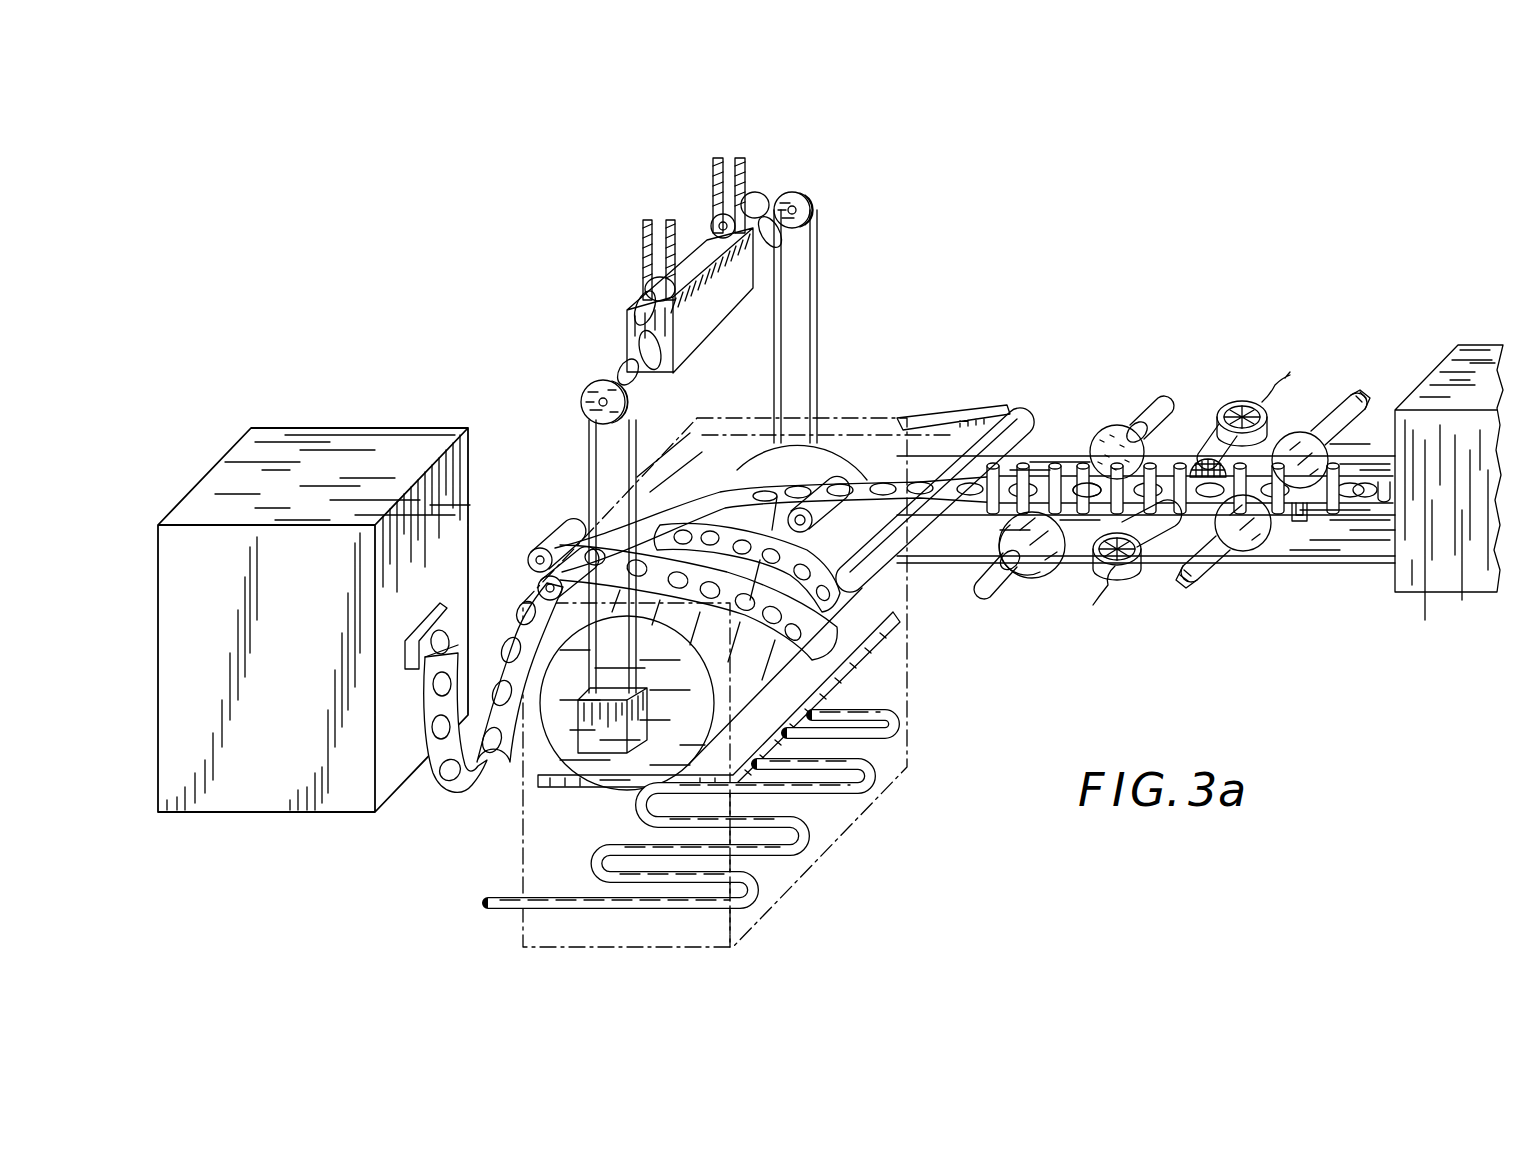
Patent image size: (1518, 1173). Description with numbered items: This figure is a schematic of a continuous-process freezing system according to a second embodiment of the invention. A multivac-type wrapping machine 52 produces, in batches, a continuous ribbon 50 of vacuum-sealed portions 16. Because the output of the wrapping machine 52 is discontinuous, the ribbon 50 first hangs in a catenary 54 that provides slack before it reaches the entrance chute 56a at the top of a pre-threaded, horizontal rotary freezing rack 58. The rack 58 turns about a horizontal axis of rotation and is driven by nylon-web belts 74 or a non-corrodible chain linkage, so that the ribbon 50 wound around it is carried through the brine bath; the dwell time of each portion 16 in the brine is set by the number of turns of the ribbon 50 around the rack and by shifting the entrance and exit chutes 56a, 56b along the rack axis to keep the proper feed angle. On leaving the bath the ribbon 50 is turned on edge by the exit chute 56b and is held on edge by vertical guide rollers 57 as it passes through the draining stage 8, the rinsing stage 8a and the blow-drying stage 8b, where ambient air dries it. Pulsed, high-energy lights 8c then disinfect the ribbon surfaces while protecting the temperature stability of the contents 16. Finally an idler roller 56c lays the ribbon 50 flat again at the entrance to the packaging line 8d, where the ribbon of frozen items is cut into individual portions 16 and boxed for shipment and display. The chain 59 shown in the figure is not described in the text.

The draining stage 8 is at (987, 403).
The rinsing stage 8a is at (1040, 578).
The blow-drying stage 8b is at (1130, 570).
The pulsed high-energy lights 8c is at (1228, 566).
The packaging line 8d is at (1454, 534).
The vacuum-sealed portions 16 is at (1086, 468).
The continuous ribbon 50 is at (462, 652).
The wrapping machine 52 is at (311, 647).
The catenary 54 is at (434, 788).
The entrance chute 56a is at (547, 536).
The exit chute 56b is at (828, 492).
The idler roller 56c is at (1384, 470).
The vertical guide rollers 57 is at (1196, 454).
The rotary freezing rack 58 is at (672, 749).
The chain 59 is at (746, 200).
The nylon-web belts 74 is at (817, 298).